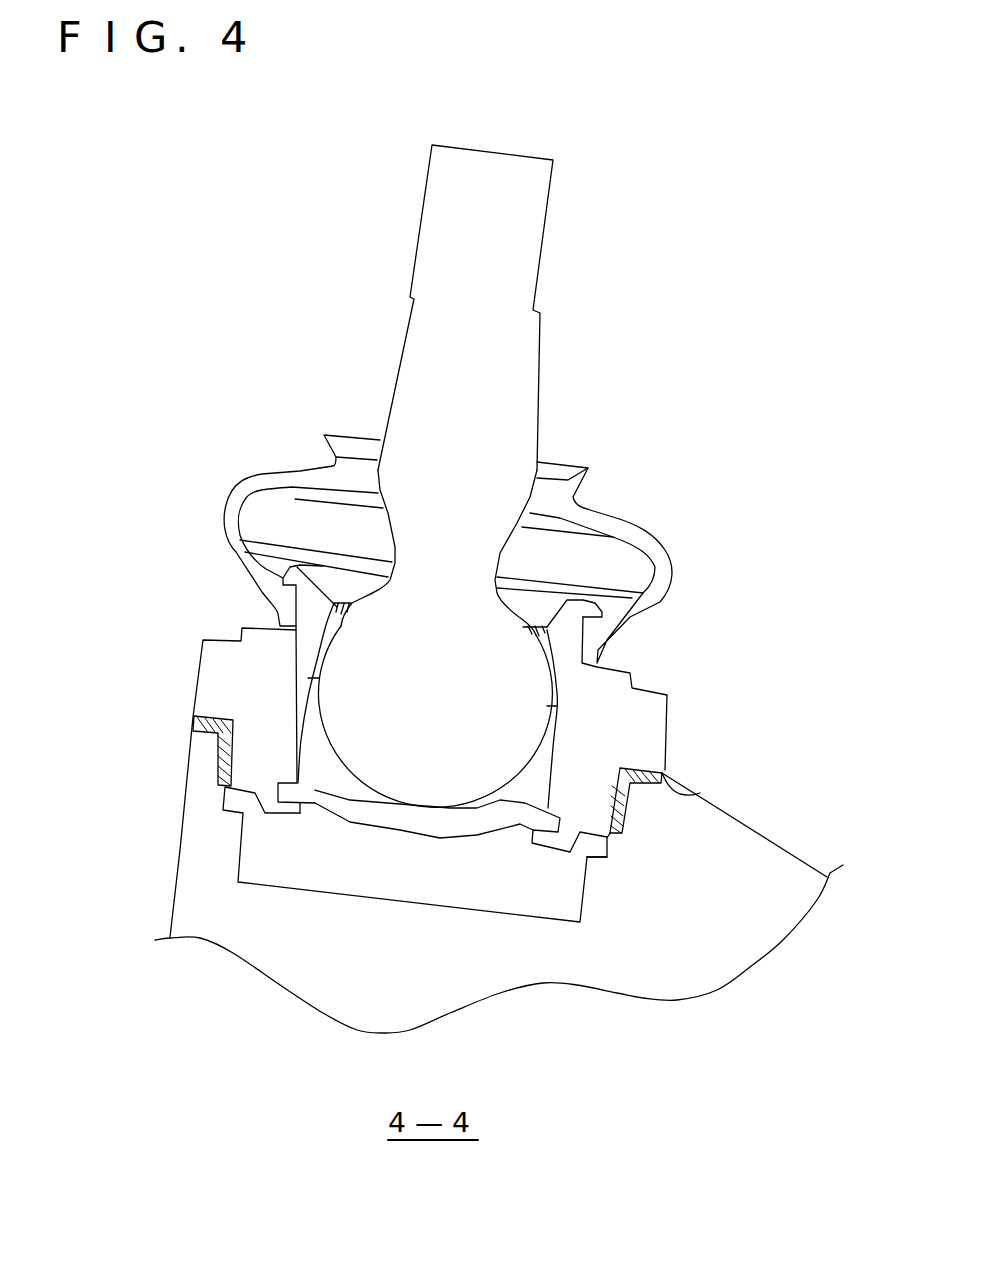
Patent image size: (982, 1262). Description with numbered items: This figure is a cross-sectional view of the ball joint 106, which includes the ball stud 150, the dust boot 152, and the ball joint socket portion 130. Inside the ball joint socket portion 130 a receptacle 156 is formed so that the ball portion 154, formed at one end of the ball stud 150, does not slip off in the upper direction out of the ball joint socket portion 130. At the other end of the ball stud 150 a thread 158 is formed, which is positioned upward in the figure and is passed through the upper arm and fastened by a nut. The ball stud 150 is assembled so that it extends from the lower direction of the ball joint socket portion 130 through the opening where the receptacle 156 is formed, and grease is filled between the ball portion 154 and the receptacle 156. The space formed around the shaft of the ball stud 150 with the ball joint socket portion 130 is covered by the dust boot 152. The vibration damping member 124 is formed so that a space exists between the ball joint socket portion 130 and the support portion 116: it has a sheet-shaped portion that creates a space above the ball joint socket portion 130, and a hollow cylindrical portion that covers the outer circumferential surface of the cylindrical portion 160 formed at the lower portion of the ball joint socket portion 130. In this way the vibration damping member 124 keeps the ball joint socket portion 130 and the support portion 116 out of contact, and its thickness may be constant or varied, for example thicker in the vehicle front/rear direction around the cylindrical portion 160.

The ball joint 106 is at (667, 506).
The support portion 116 is at (780, 860).
The vibration damping member 124 is at (685, 793).
The ball joint socket portion 130 is at (203, 657).
The ball stud 150 is at (394, 329).
The dust boot 152 is at (262, 478).
The ball portion 154 is at (535, 700).
The receptacle 156 is at (553, 743).
The thread 158 is at (542, 263).
The cylindrical portion 160 is at (597, 857).